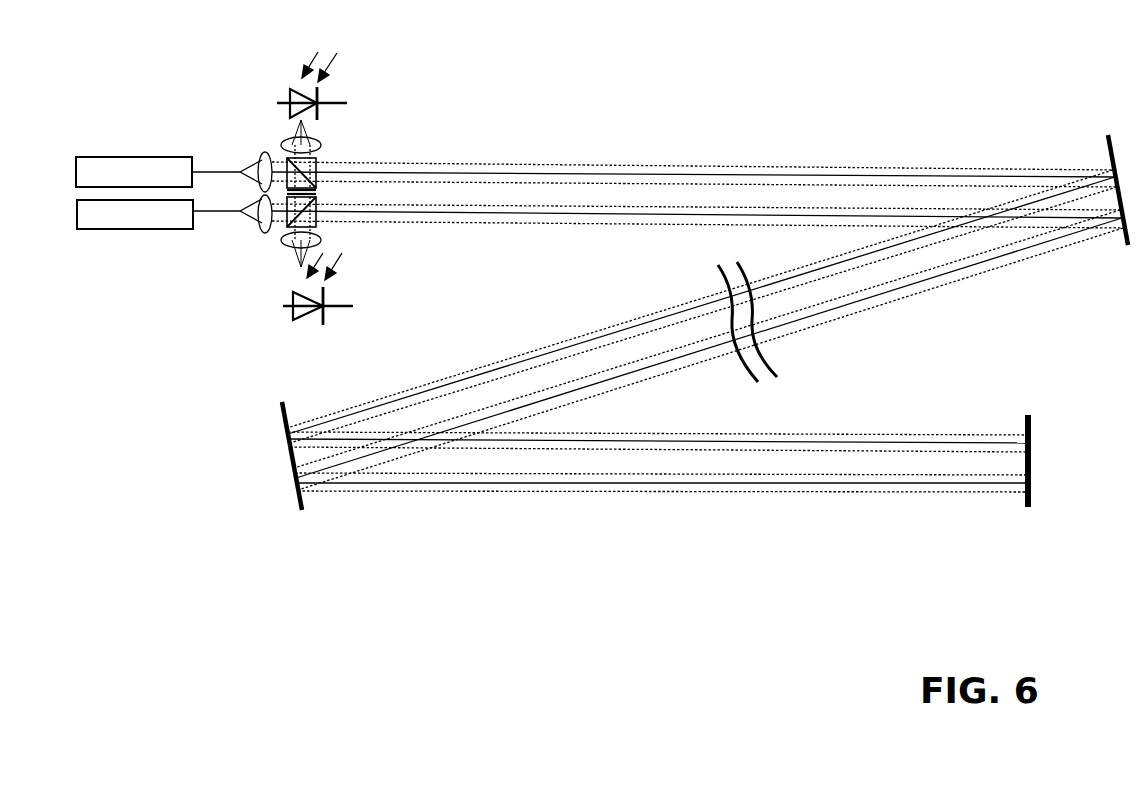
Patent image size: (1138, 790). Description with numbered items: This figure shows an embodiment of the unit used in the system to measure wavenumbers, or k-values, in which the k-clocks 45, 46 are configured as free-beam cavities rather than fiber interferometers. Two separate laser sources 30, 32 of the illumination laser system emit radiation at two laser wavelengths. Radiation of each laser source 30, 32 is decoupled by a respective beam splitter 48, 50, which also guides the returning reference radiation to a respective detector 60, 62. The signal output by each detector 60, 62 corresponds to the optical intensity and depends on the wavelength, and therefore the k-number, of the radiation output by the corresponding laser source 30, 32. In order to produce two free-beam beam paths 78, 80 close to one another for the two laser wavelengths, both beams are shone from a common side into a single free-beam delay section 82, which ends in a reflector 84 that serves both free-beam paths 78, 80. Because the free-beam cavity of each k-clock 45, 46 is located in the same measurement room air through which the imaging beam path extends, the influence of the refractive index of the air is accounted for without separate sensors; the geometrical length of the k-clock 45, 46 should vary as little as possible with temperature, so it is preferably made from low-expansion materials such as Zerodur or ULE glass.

The laser source 30 is at (88, 168).
The laser source 32 is at (113, 220).
The k-clock 45 is at (350, 145).
The k-clock 46 is at (237, 257).
The beam splitter 48 is at (317, 183).
The beam splitter 50 is at (317, 223).
The detector 60 is at (337, 103).
The detector 62 is at (338, 308).
The free-beam beam path 78 is at (592, 163).
The free-beam beam path 80 is at (622, 223).
The free-beam delay section 82 is at (903, 342).
The reflector 84 is at (1032, 462).